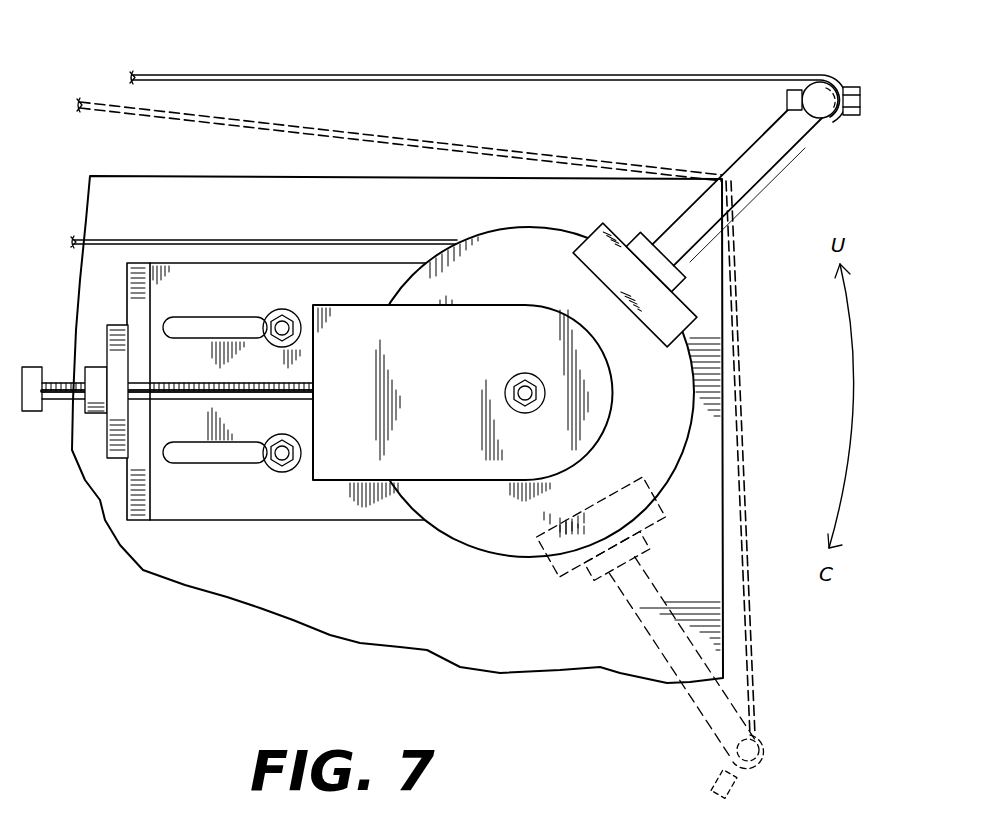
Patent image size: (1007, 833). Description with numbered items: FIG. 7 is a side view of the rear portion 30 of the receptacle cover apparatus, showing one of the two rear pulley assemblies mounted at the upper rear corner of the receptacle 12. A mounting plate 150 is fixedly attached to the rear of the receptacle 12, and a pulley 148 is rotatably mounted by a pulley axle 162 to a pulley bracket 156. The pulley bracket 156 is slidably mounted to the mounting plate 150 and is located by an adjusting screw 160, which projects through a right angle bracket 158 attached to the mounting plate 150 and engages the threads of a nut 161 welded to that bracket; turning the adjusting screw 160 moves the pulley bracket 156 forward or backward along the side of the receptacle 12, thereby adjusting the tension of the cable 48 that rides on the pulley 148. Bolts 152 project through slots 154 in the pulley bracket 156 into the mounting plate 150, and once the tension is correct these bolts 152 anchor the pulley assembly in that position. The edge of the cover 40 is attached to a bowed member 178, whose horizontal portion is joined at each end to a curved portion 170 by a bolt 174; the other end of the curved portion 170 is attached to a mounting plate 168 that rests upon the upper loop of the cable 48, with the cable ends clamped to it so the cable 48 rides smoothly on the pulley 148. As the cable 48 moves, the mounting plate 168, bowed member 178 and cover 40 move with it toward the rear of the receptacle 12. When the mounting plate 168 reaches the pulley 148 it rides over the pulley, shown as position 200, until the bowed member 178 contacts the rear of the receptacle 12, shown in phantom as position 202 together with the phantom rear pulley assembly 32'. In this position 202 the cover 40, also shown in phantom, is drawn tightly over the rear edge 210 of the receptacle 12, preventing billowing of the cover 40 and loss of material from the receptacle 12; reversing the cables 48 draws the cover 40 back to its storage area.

The receptacle 12 is at (269, 212).
The rear portion 30 is at (160, 622).
The rear pulley assembly 32' is at (581, 542).
The cover 40 is at (445, 75).
The cable 48 is at (125, 240).
The pulley 148 is at (470, 518).
The mounting plate 150 is at (141, 525).
The bolt 152 is at (285, 310).
The slot 154 is at (238, 322).
The pulley bracket 156 is at (366, 284).
The right angle bracket 158 is at (112, 457).
The adjusting screw 160 is at (59, 378).
The nut 161 is at (91, 418).
The pulley axle 162 is at (463, 406).
The mounting plate 168 is at (693, 318).
The curved portion 170 is at (790, 127).
The bolt 174 is at (846, 85).
The bowed member 178 is at (795, 171).
The position 200 is at (806, 62).
The position 202 is at (678, 716).
The rear edge 210 is at (722, 192).